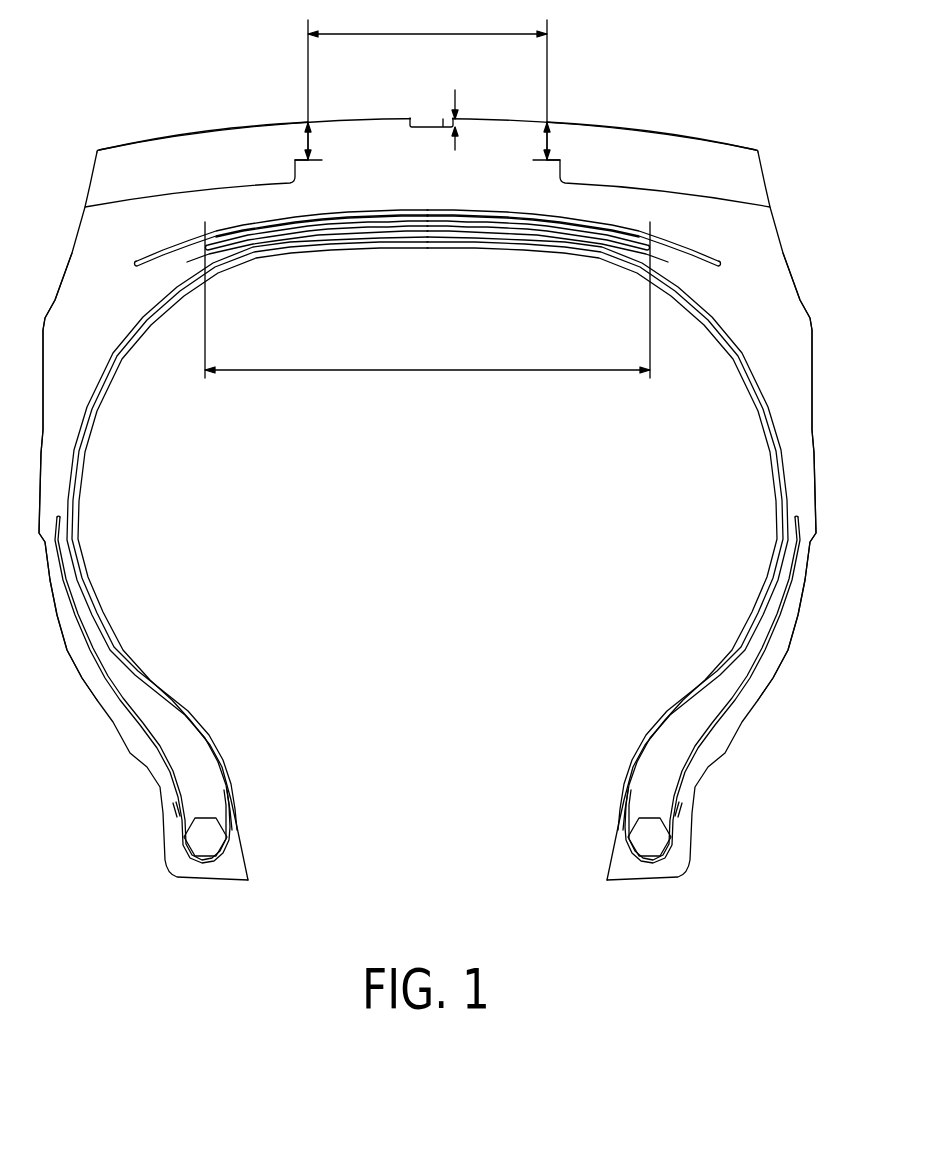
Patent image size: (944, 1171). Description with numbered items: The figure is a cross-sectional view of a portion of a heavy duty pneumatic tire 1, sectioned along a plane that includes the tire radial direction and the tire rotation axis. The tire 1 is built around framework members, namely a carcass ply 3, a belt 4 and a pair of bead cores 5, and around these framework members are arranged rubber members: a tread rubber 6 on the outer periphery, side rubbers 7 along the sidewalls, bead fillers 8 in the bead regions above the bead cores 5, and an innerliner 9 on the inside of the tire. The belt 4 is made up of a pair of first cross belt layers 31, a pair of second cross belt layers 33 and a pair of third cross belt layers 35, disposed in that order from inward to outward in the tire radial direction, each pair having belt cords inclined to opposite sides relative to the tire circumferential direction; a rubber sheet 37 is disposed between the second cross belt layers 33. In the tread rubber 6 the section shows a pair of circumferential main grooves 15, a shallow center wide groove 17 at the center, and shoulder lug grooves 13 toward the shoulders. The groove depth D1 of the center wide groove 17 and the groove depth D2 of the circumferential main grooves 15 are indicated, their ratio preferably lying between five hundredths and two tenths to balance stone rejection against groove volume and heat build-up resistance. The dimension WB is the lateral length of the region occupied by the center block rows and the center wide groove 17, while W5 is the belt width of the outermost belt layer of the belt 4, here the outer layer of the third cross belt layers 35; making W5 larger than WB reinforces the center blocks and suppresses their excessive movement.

The heavy duty pneumatic tire 1 is at (752, 53).
The carcass ply 3 is at (768, 436).
The belt 4 is at (488, 284).
The bead cores 5 is at (207, 848).
The tread rubber 6 is at (757, 148).
The side rubbers 7 is at (818, 486).
The bead fillers 8 is at (657, 788).
The innerliner 9 is at (765, 582).
The shoulder lug grooves 13 is at (200, 137).
The circumferential main grooves 15 is at (281, 138).
The center wide groove 17 is at (424, 117).
The first cross belt layers 31 is at (612, 248).
The second cross belt layers 33 is at (540, 244).
The third cross belt layers 35 is at (228, 246).
The rubber sheet 37 is at (357, 230).
The length of the region occupied by the center block rows WB is at (427, 83).
The belt width of the outermost belt layer W5 is at (427, 310).
The groove depth of the center wide groove D1 is at (458, 104).
The groove depth of the circumferential main grooves D2 is at (313, 152).